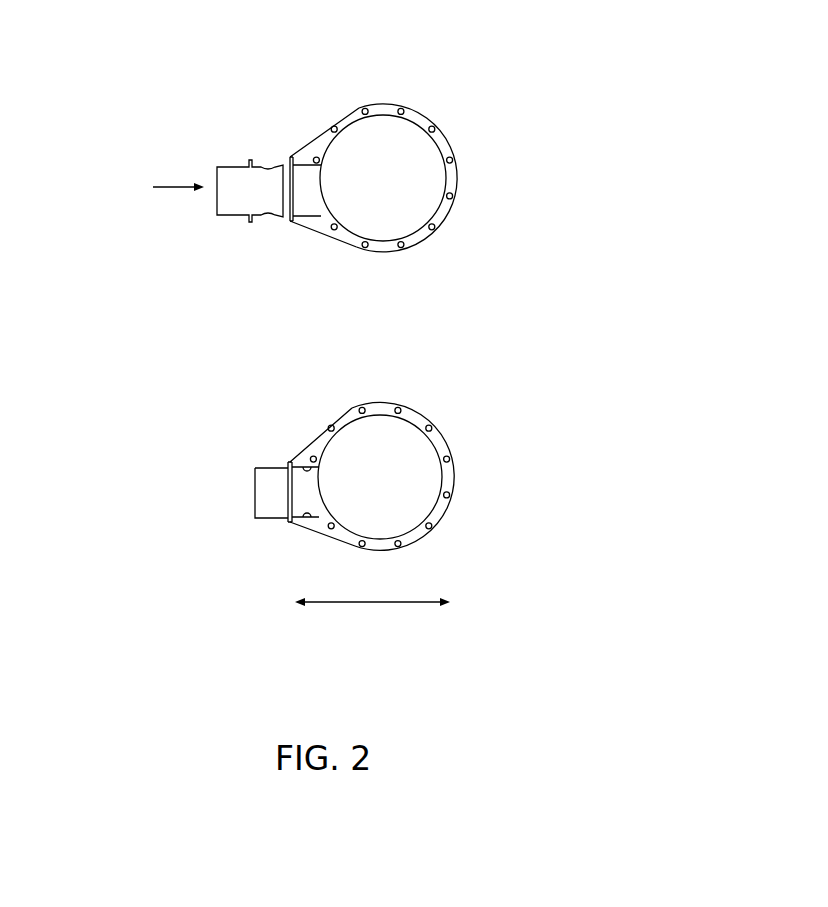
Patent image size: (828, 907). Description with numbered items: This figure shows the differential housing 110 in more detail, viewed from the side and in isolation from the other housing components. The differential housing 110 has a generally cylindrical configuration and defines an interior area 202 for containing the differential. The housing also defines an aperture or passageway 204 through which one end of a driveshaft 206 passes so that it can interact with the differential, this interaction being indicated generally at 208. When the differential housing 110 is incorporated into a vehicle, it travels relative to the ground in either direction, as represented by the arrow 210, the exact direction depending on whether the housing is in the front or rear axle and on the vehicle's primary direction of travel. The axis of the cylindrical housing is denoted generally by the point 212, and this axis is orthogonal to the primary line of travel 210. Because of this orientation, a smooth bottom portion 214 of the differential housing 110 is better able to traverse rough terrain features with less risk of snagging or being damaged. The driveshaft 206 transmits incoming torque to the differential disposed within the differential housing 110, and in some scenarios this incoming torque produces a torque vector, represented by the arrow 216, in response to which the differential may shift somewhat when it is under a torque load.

The differential housing 110 is at (476, 48).
The interior area 202 is at (366, 188).
The aperture or passageway 204 is at (308, 198).
The driveshaft 206 is at (228, 173).
The torque vector 216 is at (178, 203).
The driveshaft interaction location 208 is at (273, 523).
The primary line of travel 210 is at (350, 603).
The cylinder axis point 212 is at (396, 464).
The smooth bottom portion 214 is at (327, 553).